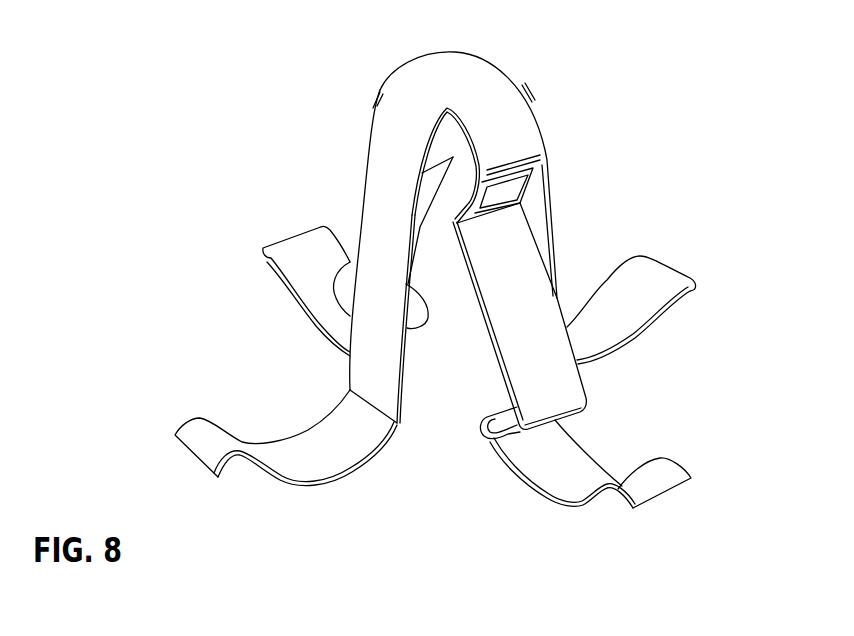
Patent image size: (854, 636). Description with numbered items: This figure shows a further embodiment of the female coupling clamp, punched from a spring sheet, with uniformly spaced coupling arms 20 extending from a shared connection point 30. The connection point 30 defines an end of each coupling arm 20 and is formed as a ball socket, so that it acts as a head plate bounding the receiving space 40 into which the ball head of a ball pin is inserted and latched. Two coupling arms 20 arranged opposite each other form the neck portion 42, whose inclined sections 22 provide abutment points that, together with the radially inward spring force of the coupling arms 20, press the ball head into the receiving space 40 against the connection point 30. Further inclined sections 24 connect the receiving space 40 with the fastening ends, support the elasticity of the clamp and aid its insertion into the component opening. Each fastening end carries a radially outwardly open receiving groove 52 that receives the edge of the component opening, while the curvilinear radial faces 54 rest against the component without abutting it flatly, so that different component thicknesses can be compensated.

The coupling arms 20 is at (370, 333).
The inclined sections 22 is at (463, 198).
The inclined sections 24 is at (523, 338).
The connection point 30 is at (482, 82).
The receiving space 40 is at (462, 152).
The neck portion 42 is at (512, 188).
The receiving groove 52 is at (560, 444).
The radial faces 54 is at (490, 442).